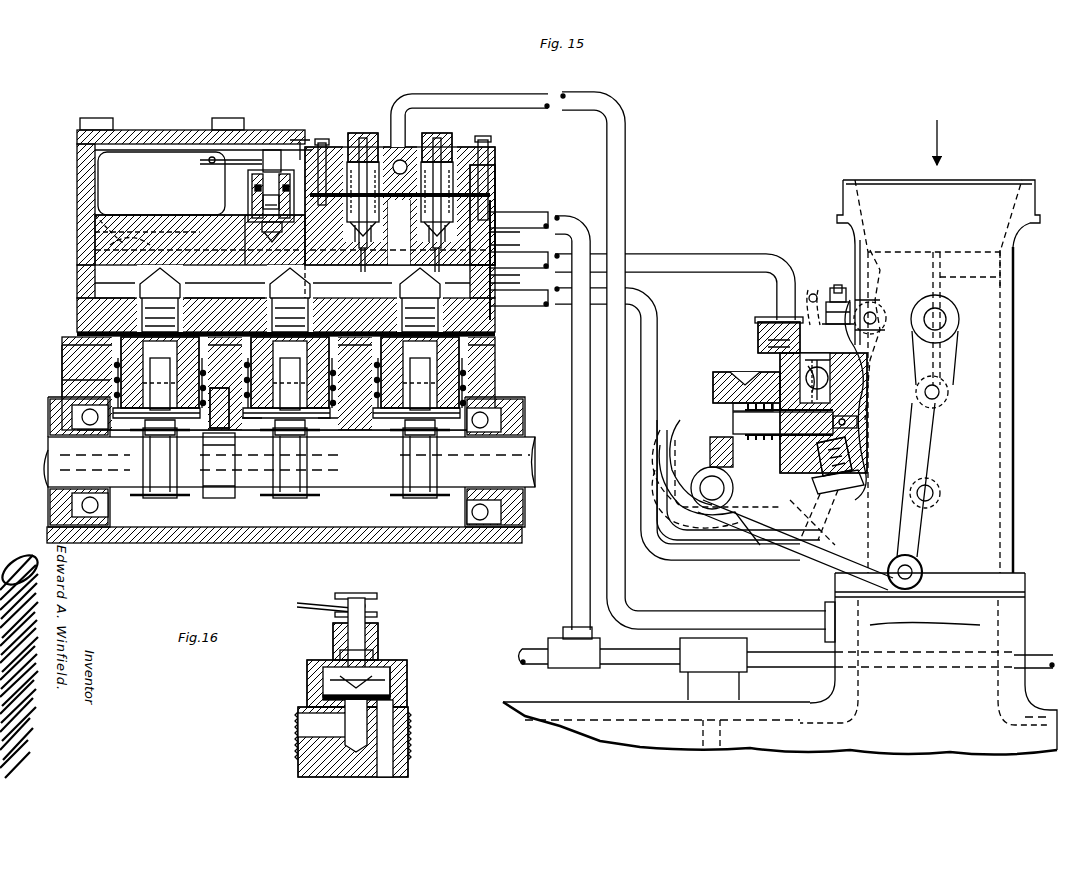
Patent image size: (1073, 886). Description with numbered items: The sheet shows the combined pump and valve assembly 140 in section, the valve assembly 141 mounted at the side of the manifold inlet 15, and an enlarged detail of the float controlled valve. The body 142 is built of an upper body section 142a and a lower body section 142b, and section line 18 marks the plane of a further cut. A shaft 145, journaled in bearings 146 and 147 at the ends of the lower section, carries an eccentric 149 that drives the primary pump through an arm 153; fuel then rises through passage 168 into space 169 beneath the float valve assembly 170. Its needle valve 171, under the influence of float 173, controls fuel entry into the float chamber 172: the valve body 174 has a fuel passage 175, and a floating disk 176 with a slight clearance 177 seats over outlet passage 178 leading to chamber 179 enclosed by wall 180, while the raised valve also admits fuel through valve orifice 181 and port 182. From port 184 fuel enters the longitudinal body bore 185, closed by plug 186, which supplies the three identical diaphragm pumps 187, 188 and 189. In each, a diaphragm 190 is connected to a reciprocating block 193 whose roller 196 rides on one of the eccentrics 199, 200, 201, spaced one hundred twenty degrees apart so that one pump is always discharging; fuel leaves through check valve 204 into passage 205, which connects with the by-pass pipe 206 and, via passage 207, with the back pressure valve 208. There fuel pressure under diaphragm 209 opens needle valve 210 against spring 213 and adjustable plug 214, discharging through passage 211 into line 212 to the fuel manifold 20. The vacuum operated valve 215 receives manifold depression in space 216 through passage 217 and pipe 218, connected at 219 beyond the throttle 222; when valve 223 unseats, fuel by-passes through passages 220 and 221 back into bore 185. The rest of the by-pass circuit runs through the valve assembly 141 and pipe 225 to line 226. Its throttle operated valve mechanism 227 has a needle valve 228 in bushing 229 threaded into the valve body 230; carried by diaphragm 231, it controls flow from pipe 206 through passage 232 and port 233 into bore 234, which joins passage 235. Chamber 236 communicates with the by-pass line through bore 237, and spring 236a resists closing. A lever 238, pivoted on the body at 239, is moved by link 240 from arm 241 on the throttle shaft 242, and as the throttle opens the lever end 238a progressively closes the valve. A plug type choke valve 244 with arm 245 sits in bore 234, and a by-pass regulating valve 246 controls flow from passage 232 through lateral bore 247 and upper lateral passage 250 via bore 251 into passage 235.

In FIG. 15, the manifold inlet 15 is at (1008, 389).
In FIG. 15, the section line 18 is at (272, 140).
In FIG. 15, the fuel manifold 20 is at (540, 650).
In FIG. 15, the combined pump and valve assembly 140 is at (505, 182).
In FIG. 15, the valve assembly 141 is at (740, 350).
In FIG. 15, the body 142 is at (78, 328).
In FIG. 15, the upper body section 142a is at (78, 229).
In FIG. 15, the lower body section 142b is at (70, 381).
In FIG. 15, the shaft 145 is at (348, 478).
In FIG. 15, the bearing 146 is at (60, 517).
In FIG. 15, the bearing 147 is at (472, 540).
In FIG. 15, the eccentric 149 is at (215, 500).
In FIG. 15, the arm 153 is at (200, 500).
In FIG. 15, the passage 168 is at (262, 286).
In FIG. 15, the space 169 is at (250, 240).
In FIG. 15, the float valve assembly 170 is at (306, 142).
In FIG. 16, the float valve assembly 170 is at (385, 636).
In FIG. 15, the needle valve 171 is at (300, 140).
In FIG. 16, the needle valve 171 is at (370, 625).
In FIG. 15, the float chamber 172 is at (80, 186).
In FIG. 15, the float 173 is at (165, 160).
In FIG. 16, the valve body 174 is at (392, 680).
In FIG. 16, the fuel passage 175 is at (392, 735).
In FIG. 16, the floating disk 176 is at (400, 689).
In FIG. 16, the clearance 177 is at (322, 700).
In FIG. 15, the outlet passage 178 is at (248, 205).
In FIG. 16, the outlet passage 178 is at (308, 756).
In FIG. 15, the chamber 179 is at (248, 192).
In FIG. 15, the wall 180 is at (258, 150).
In FIG. 16, the valve orifice 181 is at (320, 666).
In FIG. 16, the port 182 is at (380, 656).
In FIG. 15, the port 184 is at (182, 234).
In FIG. 15, the longitudinal body bore 185 is at (78, 208).
In FIG. 15, the plug 186 is at (78, 251).
In FIG. 15, the diaphragm pump 187 is at (78, 348).
In FIG. 15, the diaphragm pump 188 is at (242, 365).
In FIG. 15, the diaphragm pump 189 is at (330, 370).
In FIG. 15, the diaphragm 190 is at (330, 385).
In FIG. 15, the reciprocating block 193 is at (330, 398).
In FIG. 15, the roller 196 is at (300, 420).
In FIG. 15, the eccentric 199 is at (283, 495).
In FIG. 15, the eccentric 200 is at (158, 492).
In FIG. 15, the eccentric 201 is at (402, 498).
In FIG. 15, the check valve 204 is at (292, 285).
In FIG. 15, the passage 205 is at (80, 292).
In FIG. 15, the pipe 206 is at (515, 303).
In FIG. 15, the passage 207 is at (502, 242).
In FIG. 15, the back pressure valve 208 is at (492, 150).
In FIG. 15, the diaphragm 209 is at (492, 168).
In FIG. 15, the needle valve 210 is at (500, 205).
In FIG. 15, the passage 211 is at (515, 215).
In FIG. 15, the line 212 is at (570, 228).
In FIG. 15, the spring 213 is at (460, 152).
In FIG. 15, the adjustable plug 214 is at (455, 140).
In FIG. 15, the vacuum operated valve 215 is at (363, 132).
In FIG. 15, the space 216 is at (376, 135).
In FIG. 15, the passage 217 is at (405, 130).
In FIG. 15, the pipe 218 is at (495, 100).
In FIG. 15, the connection 219 is at (825, 603).
In FIG. 15, the passage 220 is at (345, 260).
In FIG. 15, the passage 221 is at (312, 142).
In FIG. 15, the throttle 222 is at (1002, 274).
In FIG. 15, the valve 223 is at (398, 262).
In FIG. 15, the pipe 225 is at (778, 304).
In FIG. 15, the line 226 is at (515, 265).
In FIG. 15, the throttle operated valve mechanism 227 is at (725, 400).
In FIG. 15, the needle valve 228 is at (815, 462).
In FIG. 15, the bushing 229 is at (825, 480).
In FIG. 15, the valve body 230 is at (775, 380).
In FIG. 15, the diaphragm 231 is at (740, 412).
In FIG. 15, the passage 232 is at (840, 432).
In FIG. 15, the port 233 is at (825, 410).
In FIG. 15, the bore 234 is at (815, 395).
In FIG. 15, the passage 235 is at (838, 290).
In FIG. 15, the chamber 236 is at (735, 518).
In FIG. 15, the spring 236a is at (760, 530).
In FIG. 15, the bore 237 is at (758, 345).
In FIG. 15, the lever 238 is at (780, 548).
In FIG. 15, the lever end 238a is at (740, 420).
In FIG. 15, the pivot 239 is at (705, 500).
In FIG. 15, the link 240 is at (930, 431).
In FIG. 15, the arm 241 is at (940, 356).
In FIG. 15, the throttle shaft 242 is at (945, 318).
In FIG. 15, the plug type valve 244 is at (760, 370).
In FIG. 15, the arm 245 is at (808, 290).
In FIG. 15, the by-pass regulating valve 246 is at (845, 290).
In FIG. 15, the lateral bore 247 is at (912, 425).
In FIG. 15, the upper lateral passage 250 is at (865, 305).
In FIG. 15, the bore 251 is at (860, 292).